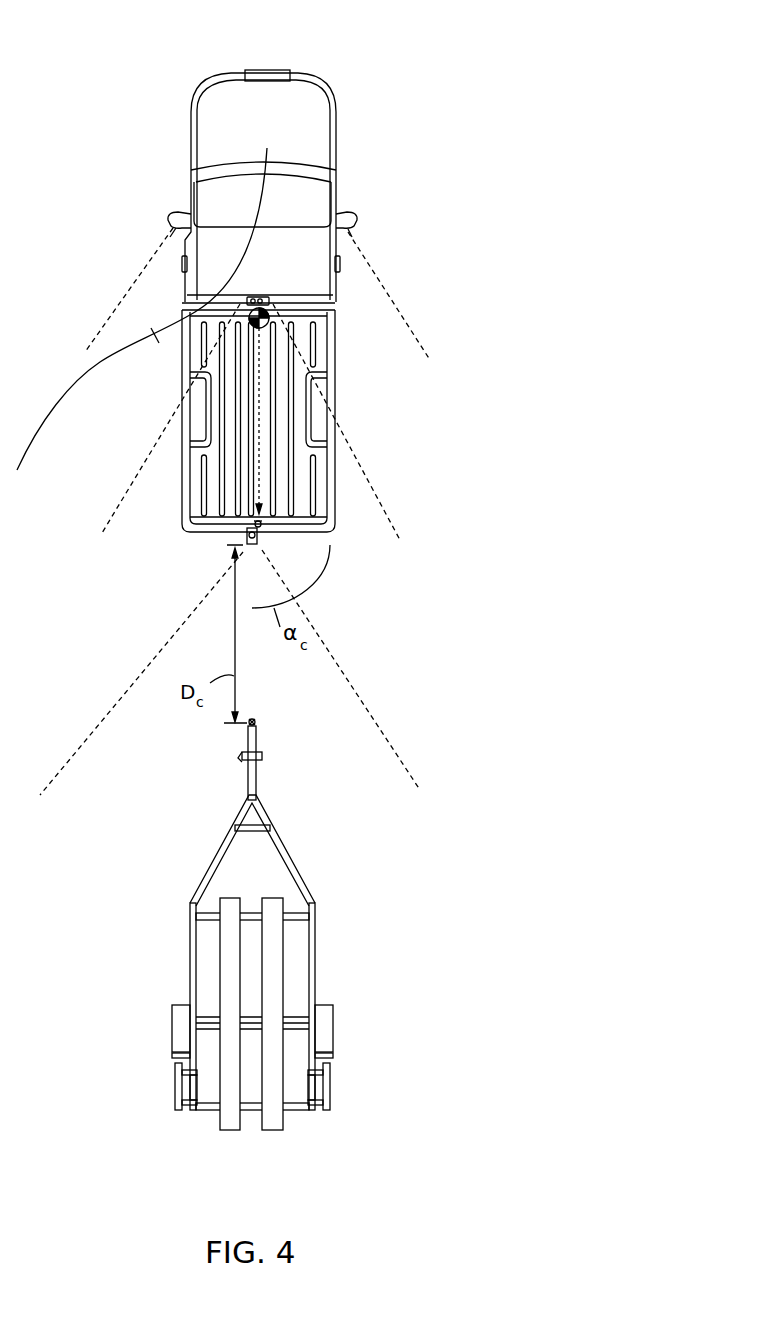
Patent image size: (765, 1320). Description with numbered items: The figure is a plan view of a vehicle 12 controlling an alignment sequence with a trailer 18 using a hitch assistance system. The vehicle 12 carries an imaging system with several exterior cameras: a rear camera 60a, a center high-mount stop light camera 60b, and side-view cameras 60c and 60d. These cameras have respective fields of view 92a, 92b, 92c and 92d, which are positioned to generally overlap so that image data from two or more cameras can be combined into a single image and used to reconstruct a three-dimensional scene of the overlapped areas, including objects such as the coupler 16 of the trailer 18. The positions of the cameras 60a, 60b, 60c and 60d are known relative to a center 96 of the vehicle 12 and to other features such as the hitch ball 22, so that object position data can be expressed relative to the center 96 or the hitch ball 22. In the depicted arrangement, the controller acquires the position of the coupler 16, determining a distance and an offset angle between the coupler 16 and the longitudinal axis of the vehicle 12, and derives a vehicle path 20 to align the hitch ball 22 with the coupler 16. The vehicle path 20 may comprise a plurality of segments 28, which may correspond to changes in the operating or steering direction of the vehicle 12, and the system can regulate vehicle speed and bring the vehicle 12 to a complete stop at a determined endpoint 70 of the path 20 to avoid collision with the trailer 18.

The vehicle 12 is at (341, 41).
The coupler 16 is at (258, 738).
The trailer 18 is at (204, 879).
The vehicle path 20 is at (267, 438).
The hitch ball 22 is at (247, 539).
The segments 28 is at (240, 299).
The rear camera 60a is at (260, 522).
The center high-mount stop light (CHMSL) camera 60b is at (261, 298).
The side-view camera 60c is at (352, 237).
The side-view camera 60d is at (170, 237).
The endpoint 70 is at (258, 508).
The field of view 92a is at (153, 653).
The field of view 92b is at (110, 513).
The field of view 92c is at (408, 321).
The field of view 92d is at (97, 332).
The center 96 is at (285, 312).